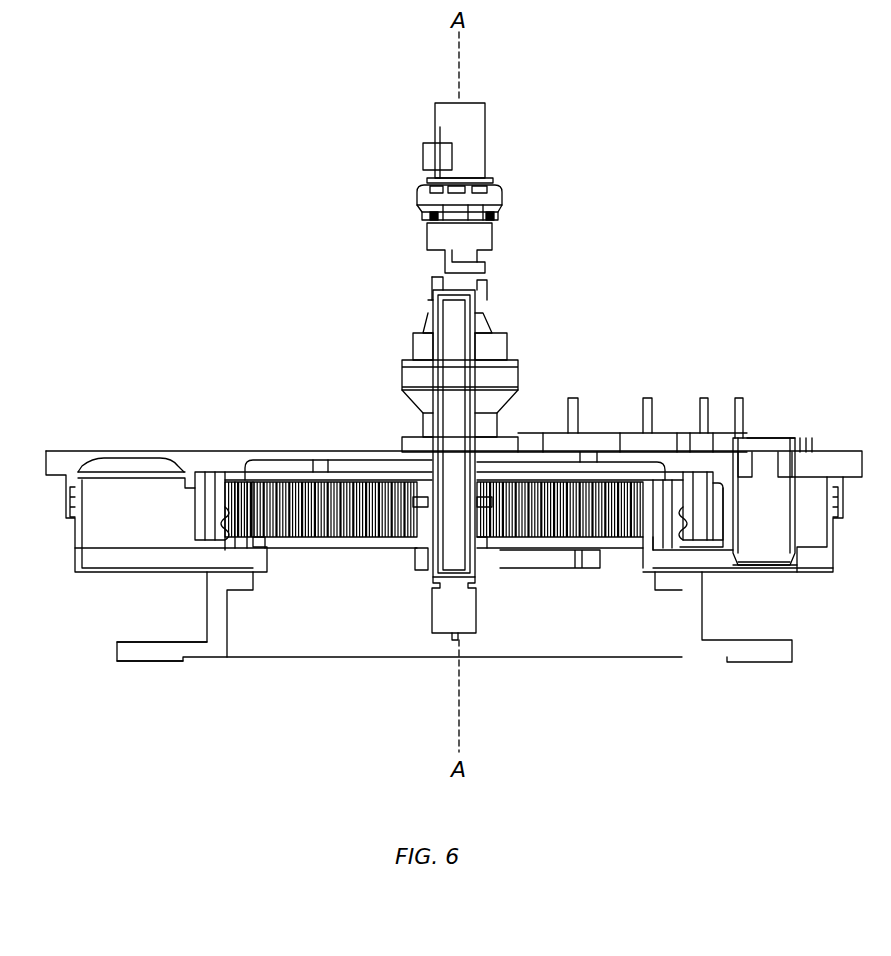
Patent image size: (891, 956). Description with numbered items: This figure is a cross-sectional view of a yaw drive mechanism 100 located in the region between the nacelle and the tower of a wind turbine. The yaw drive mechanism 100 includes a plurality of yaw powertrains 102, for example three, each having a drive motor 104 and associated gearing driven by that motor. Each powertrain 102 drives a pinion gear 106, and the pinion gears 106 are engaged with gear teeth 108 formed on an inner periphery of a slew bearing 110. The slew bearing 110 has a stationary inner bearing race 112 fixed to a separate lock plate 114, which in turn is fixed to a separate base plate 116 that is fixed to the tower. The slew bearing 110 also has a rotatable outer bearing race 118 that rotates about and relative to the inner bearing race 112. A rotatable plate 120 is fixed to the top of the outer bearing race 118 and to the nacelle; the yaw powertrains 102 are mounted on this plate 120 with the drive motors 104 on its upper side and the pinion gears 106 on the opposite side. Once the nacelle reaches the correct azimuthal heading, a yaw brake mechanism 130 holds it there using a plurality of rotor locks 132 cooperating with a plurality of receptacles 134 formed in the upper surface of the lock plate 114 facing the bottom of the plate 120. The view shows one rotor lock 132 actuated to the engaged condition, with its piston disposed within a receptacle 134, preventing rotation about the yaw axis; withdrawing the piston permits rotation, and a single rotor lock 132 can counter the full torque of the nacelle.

The yaw drive mechanism 100 is at (806, 171).
The yaw powertrain 102 is at (532, 200).
The drive motor 104 is at (484, 110).
The pinion gear 106 is at (497, 486).
The gear teeth 108 is at (311, 538).
The slew bearing 110 is at (226, 488).
The inner bearing race 112 is at (259, 500).
The lock plate 114 is at (120, 557).
The base plate 116 is at (163, 662).
The outer bearing race 118 is at (693, 487).
The rotatable plate 120 is at (84, 450).
The yaw brake mechanism 130 is at (778, 418).
The rotor lock 132 is at (796, 438).
The receptacle 134 is at (796, 568).